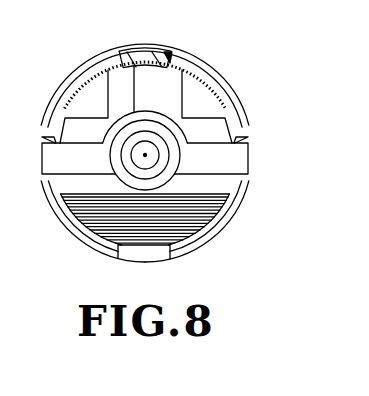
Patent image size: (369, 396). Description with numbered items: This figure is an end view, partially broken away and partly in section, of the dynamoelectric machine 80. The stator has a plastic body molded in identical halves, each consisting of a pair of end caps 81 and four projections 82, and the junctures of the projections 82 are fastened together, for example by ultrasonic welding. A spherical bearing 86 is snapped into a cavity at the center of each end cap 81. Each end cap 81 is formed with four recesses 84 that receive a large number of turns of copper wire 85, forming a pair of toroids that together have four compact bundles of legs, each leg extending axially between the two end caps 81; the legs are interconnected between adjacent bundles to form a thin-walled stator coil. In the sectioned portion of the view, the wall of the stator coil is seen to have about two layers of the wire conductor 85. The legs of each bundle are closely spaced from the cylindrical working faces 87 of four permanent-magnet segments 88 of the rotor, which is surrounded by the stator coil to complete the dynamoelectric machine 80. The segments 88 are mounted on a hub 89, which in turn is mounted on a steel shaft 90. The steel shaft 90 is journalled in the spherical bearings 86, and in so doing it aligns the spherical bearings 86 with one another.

The dynamoelectric machine 80 is at (230, 240).
The end cap 81 is at (220, 165).
The projection 82 is at (247, 139).
The recess 84 is at (60, 213).
The copper wire 85 is at (96, 228).
The spherical bearing 86 is at (160, 140).
The cylindrical working face 87 is at (163, 57).
The permanent-magnet segment 88 is at (118, 87).
The hub 89 is at (134, 66).
The steel shaft 90 is at (146, 152).